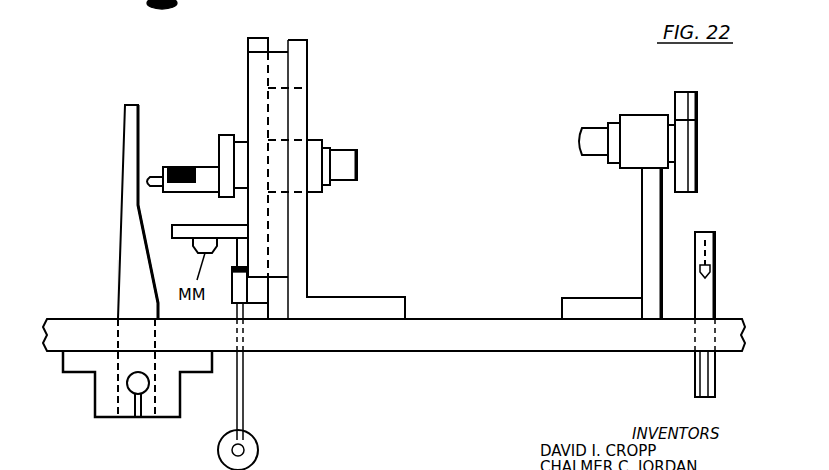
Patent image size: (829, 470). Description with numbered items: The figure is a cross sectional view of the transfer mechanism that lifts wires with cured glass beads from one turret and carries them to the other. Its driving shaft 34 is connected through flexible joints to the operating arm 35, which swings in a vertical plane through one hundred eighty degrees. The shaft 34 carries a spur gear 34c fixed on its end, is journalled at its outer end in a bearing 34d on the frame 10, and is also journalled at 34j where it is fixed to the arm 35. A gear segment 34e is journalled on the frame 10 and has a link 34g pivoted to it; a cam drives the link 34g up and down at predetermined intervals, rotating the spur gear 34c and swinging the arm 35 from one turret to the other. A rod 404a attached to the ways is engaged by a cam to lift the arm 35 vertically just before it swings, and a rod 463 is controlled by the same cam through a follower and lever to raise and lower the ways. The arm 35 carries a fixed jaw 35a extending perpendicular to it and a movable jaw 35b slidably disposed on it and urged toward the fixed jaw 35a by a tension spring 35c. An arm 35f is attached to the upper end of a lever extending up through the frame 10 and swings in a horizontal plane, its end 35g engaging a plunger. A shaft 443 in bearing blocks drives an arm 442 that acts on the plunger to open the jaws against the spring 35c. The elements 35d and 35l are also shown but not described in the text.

The frame 10 is at (611, 340).
The driving shaft 34 is at (353, 150).
The journal 34j is at (328, 152).
The spur gear 34c is at (685, 157).
The bearing 34d is at (628, 170).
The gear segment 34e is at (697, 100).
The link 34g is at (705, 296).
The operating arm 35 is at (203, 168).
The fixed jaw 35a is at (266, 38).
The movable jaw 35b is at (168, 9).
The tension spring 35c is at (134, 9).
The element 35d is at (212, 5).
The arm 35f is at (125, 118).
The end of arm 35g is at (132, 143).
The tip 35l is at (153, 186).
The rod 404a is at (244, 410).
The arm 442 is at (118, 290).
The shaft 443 is at (133, 395).
The rod 463 is at (250, 452).